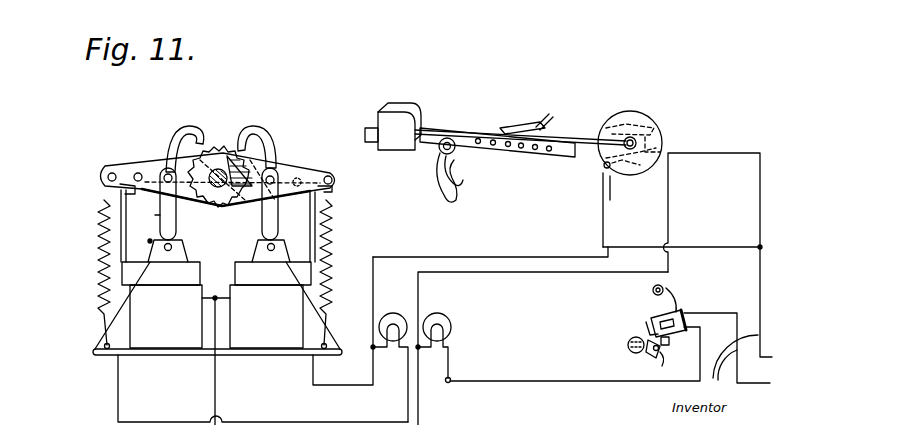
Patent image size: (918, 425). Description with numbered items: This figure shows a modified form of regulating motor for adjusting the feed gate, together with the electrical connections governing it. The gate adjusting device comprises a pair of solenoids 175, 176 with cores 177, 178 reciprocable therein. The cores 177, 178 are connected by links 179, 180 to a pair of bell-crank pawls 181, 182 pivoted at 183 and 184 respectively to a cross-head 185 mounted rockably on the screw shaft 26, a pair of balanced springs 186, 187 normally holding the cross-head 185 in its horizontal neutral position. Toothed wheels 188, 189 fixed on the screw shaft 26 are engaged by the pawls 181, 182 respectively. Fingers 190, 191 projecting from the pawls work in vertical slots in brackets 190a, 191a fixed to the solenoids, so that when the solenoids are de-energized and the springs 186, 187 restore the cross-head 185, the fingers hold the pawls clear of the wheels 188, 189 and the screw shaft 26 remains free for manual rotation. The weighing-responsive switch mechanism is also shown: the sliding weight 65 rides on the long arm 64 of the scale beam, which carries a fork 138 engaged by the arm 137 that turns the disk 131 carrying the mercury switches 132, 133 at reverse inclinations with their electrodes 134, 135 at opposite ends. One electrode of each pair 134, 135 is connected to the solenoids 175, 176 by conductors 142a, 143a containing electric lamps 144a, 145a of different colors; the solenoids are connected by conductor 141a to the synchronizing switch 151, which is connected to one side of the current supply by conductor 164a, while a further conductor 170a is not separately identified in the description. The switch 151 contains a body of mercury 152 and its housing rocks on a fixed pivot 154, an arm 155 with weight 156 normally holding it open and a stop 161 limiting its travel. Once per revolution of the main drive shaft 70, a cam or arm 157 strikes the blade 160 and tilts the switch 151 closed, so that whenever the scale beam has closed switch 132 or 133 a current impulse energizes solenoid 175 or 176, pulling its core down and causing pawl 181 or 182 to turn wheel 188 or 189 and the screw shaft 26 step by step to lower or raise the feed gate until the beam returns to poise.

The pawl 181 is at (174, 152).
The pawl 182 is at (276, 154).
The toothed wheel 189 is at (222, 150).
The screw shaft 26 is at (232, 150).
The pivot 183 is at (137, 173).
The pivot 184 is at (325, 175).
The cross-head 185 is at (334, 177).
The finger 190 is at (139, 226).
The link 179 is at (160, 222).
The bracket 190a is at (142, 242).
The toothed wheel 188 is at (208, 206).
The link 180 is at (248, 205).
The finger 191 is at (300, 227).
The bracket 191a is at (300, 234).
The spring 186 is at (100, 248).
The spring 187 is at (336, 239).
The solenoid core 177 is at (178, 269).
The solenoid core 178 is at (262, 269).
The solenoid 175 is at (148, 305).
The solenoid 176 is at (285, 305).
The sliding weight 65 is at (410, 109).
The arm 137 is at (595, 137).
The long arm of scale beam 64 is at (478, 150).
The fork 138 is at (540, 126).
The rotatable supporting disk 131 is at (662, 138).
The mercury switch 132 is at (628, 124).
The electrodes 134 is at (656, 124).
The mercury switch 133 is at (618, 178).
The electrodes 135 is at (604, 167).
The conductor 143a is at (470, 257).
The wire 170a is at (760, 268).
The conductor 142a is at (497, 272).
The electric lamp 145a is at (393, 320).
The electric lamp 144a is at (451, 328).
The conductor 141a is at (541, 381).
The conductor 164a is at (727, 352).
The main drive shaft 70 is at (652, 291).
The cam or arm 157 is at (669, 299).
The synchronizing switch 151 is at (652, 319).
The arm or blade 160 is at (683, 311).
The stop 161 is at (646, 326).
The arm 155 is at (628, 345).
The pivot 154 is at (668, 344).
The weight 156 is at (648, 356).
The body of mercury 152 is at (676, 362).